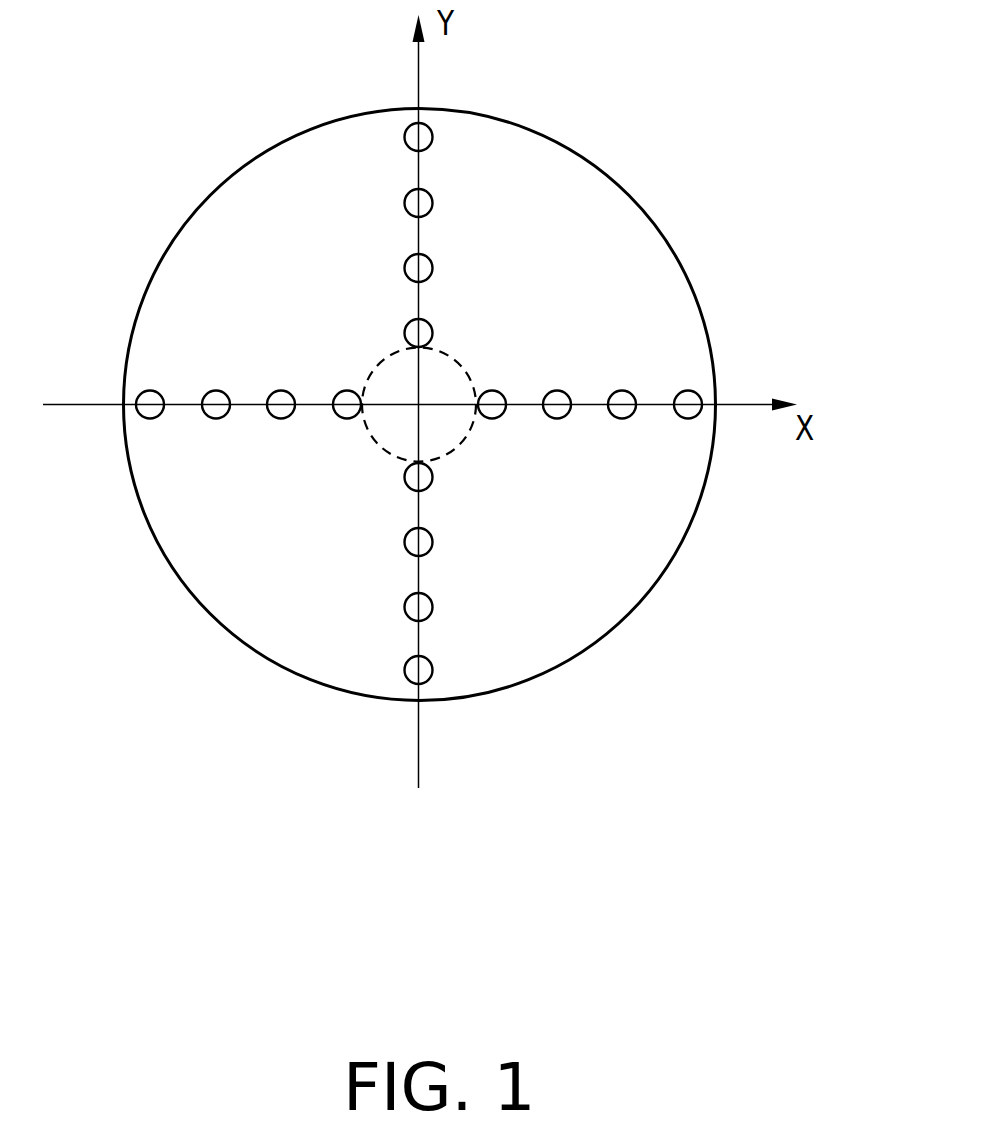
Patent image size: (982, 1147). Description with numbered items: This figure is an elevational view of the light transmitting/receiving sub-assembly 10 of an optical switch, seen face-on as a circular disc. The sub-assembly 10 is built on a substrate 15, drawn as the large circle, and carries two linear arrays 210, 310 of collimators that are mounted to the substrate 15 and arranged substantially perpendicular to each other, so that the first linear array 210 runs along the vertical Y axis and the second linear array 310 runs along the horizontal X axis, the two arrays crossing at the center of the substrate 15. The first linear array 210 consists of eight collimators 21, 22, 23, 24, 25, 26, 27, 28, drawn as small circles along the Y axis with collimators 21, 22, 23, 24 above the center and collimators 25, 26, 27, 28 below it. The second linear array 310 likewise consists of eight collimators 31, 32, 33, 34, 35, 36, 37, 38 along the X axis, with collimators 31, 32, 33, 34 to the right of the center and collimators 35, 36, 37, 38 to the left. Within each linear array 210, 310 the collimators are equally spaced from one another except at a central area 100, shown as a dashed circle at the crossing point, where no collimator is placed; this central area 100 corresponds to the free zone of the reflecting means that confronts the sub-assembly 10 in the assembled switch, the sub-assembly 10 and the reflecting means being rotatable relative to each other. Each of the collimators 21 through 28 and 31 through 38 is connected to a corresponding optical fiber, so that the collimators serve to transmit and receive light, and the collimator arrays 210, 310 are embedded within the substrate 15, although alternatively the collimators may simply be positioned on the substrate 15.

The light transmitting/receiving sub-assembly 10 is at (384, 368).
The substrate 15 is at (220, 260).
The central area 100 is at (395, 377).
The linear array 210 is at (455, 137).
The collimator 21 is at (425, 142).
The collimator 22 is at (423, 205).
The collimator 23 is at (423, 268).
The collimator 24 is at (423, 333).
The collimator 25 is at (425, 478).
The collimator 26 is at (424, 543).
The collimator 27 is at (424, 608).
The collimator 28 is at (424, 671).
The linear array 310 is at (693, 432).
The collimator 31 is at (678, 412).
The collimator 32 is at (617, 412).
The collimator 33 is at (553, 412).
The collimator 34 is at (485, 410).
The collimator 35 is at (352, 413).
The collimator 36 is at (286, 413).
The collimator 37 is at (221, 413).
The collimator 38 is at (155, 413).